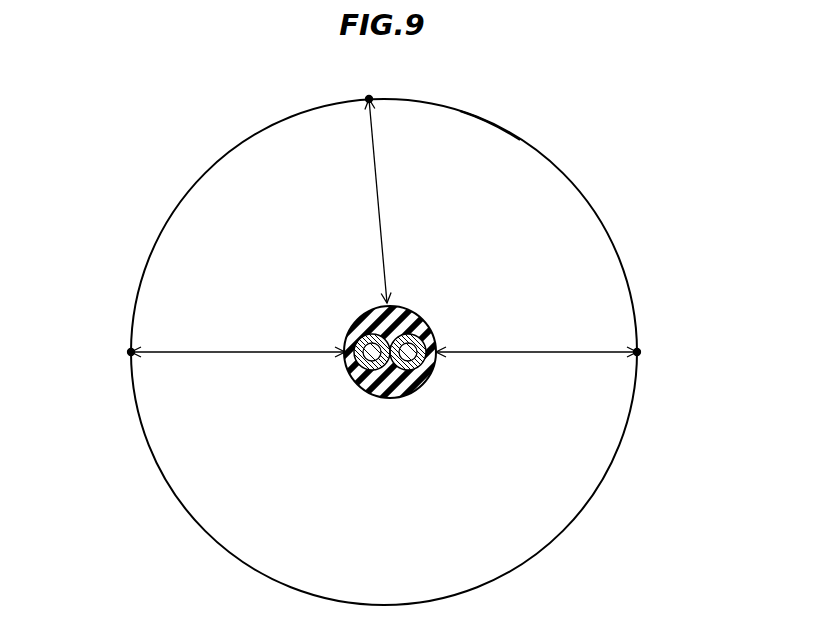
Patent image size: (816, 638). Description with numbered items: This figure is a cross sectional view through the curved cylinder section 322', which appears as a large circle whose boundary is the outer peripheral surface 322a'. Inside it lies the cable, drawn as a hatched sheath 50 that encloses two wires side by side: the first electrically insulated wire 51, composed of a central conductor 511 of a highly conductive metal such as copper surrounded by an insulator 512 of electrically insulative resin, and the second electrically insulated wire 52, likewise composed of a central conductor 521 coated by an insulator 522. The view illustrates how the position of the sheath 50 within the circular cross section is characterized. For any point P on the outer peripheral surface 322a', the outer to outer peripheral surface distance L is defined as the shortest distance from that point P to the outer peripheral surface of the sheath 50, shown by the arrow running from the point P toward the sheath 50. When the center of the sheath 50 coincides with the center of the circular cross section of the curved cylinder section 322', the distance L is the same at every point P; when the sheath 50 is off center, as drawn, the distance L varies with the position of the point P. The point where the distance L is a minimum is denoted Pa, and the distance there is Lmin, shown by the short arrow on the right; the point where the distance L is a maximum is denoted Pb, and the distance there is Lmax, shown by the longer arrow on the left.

The curved cylinder section 322' is at (384, 352).
The outer peripheral surface of the curved cylinder section 322a' is at (509, 105).
The point on the outer peripheral surface P is at (369, 99).
The point of minimum distance Pa is at (637, 352).
The point of maximum distance Pb is at (131, 352).
The outer to outer peripheral surface distance L is at (381, 201).
The maximum outer to outer peripheral surface distance Lmax is at (238, 338).
The minimum outer to outer peripheral surface distance Lmin is at (536, 339).
The sheath 50 is at (385, 393).
The first electrically insulated wire 51 is at (363, 332).
The central conductor 511 is at (360, 377).
The insulator 512 is at (357, 358).
The second electrically insulated wire 52 is at (410, 323).
The central conductor 521 is at (413, 375).
The insulator 522 is at (433, 367).